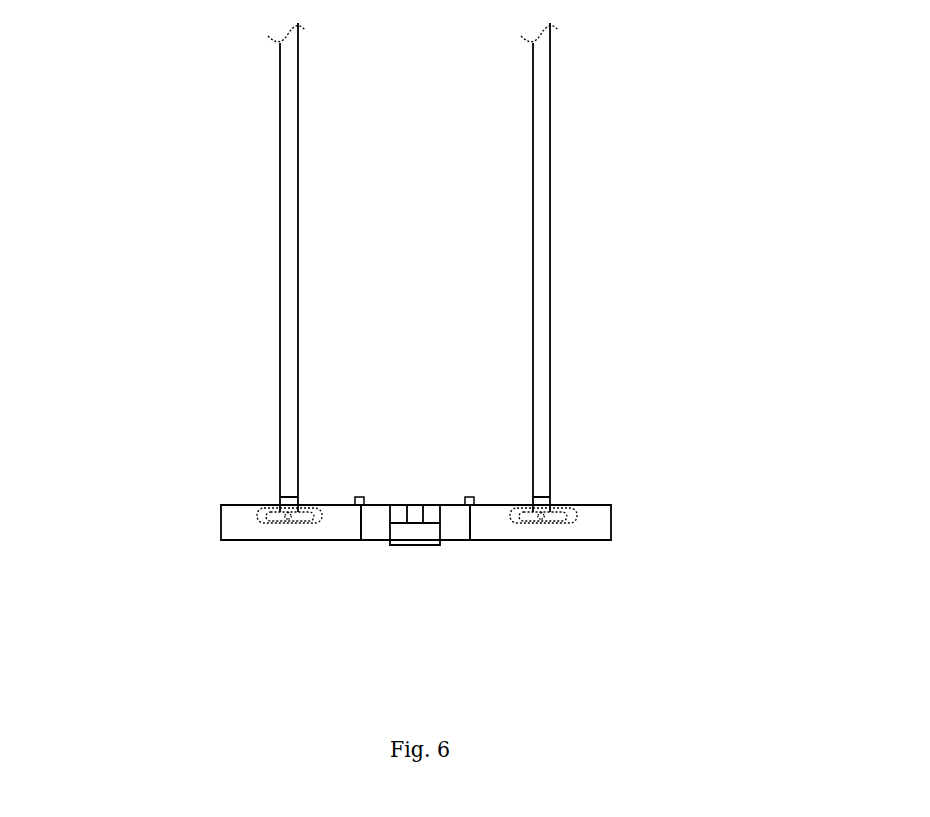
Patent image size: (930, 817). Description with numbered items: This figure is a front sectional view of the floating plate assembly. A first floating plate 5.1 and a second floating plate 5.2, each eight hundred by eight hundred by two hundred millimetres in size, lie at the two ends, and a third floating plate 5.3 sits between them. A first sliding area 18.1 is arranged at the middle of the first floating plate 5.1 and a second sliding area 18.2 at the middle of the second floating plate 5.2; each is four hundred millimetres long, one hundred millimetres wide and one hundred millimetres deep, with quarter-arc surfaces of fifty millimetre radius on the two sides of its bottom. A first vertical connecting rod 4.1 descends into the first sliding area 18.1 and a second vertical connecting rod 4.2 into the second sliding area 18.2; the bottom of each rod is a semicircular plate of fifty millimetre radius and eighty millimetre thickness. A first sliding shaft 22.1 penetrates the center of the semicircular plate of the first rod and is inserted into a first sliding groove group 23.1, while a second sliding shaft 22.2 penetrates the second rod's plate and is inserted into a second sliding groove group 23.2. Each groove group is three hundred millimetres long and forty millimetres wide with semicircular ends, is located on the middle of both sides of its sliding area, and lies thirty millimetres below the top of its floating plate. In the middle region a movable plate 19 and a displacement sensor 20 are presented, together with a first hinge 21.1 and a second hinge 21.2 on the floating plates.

The first vertical connecting rod 4.1 is at (280, 272).
The second vertical connecting rod 4.2 is at (550, 272).
The first floating plate 5.1 is at (220, 505).
The second floating plate 5.2 is at (611, 505).
The third floating plate 5.3 is at (455, 541).
The first sliding area 18.1 is at (262, 508).
The second sliding area 18.2 is at (568, 508).
The movable plate 19 is at (415, 537).
The displacement sensor 20 is at (415, 507).
The first hinge 21.1 is at (360, 497).
The second hinge 21.2 is at (470, 497).
The first sliding shaft 22.1 is at (288, 518).
The second sliding shaft 22.2 is at (541, 518).
The first sliding groove group 23.1 is at (265, 518).
The second sliding groove group 23.2 is at (575, 521).